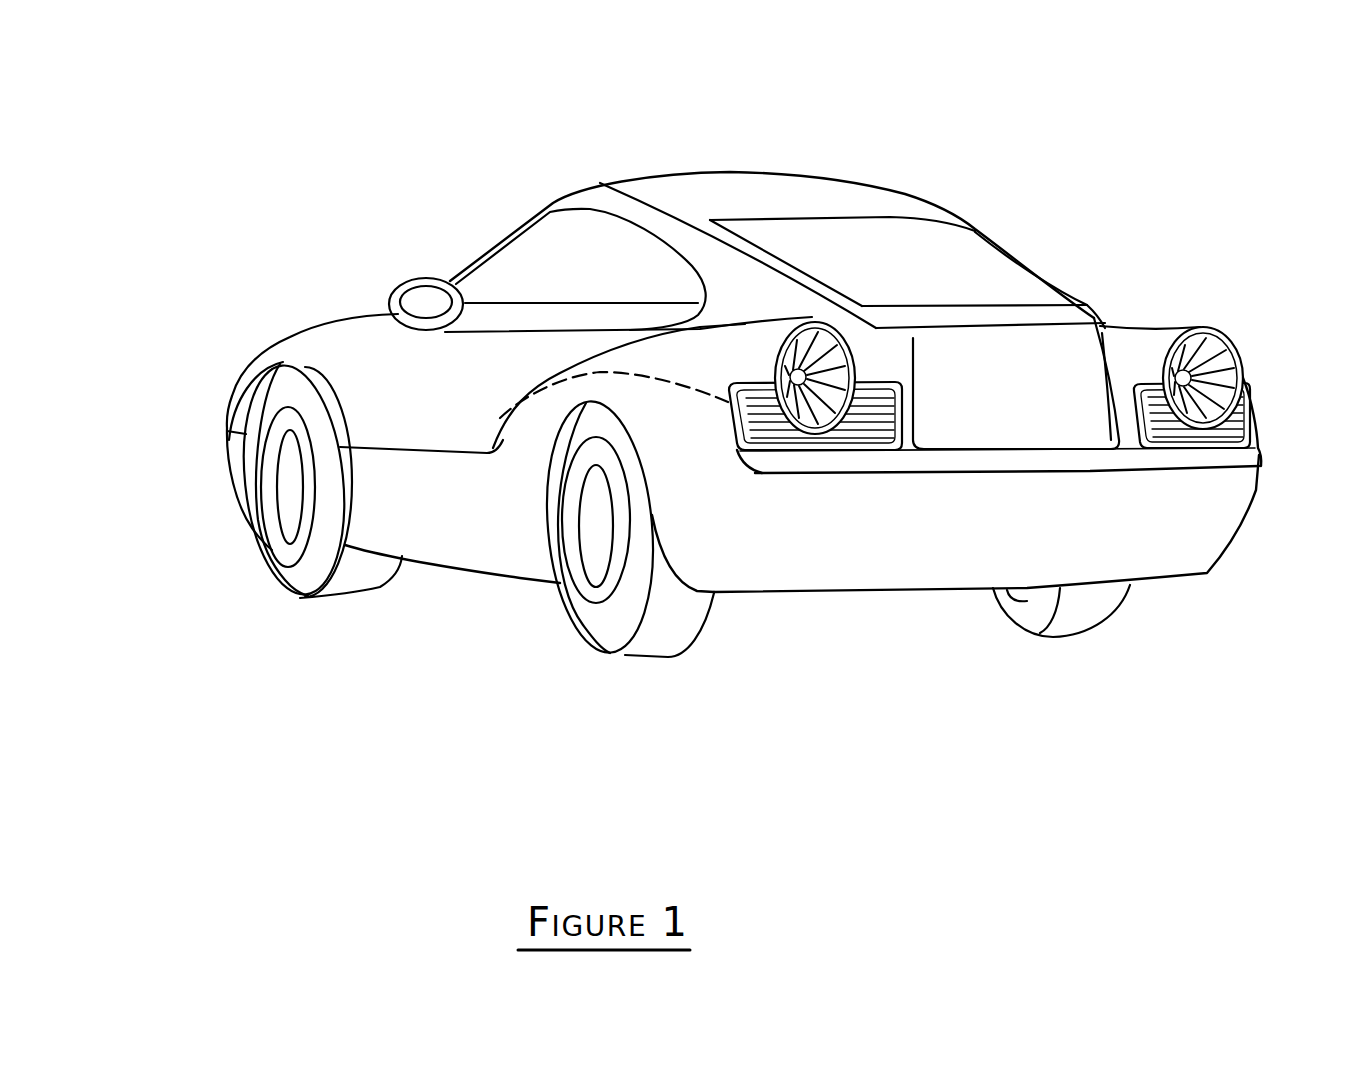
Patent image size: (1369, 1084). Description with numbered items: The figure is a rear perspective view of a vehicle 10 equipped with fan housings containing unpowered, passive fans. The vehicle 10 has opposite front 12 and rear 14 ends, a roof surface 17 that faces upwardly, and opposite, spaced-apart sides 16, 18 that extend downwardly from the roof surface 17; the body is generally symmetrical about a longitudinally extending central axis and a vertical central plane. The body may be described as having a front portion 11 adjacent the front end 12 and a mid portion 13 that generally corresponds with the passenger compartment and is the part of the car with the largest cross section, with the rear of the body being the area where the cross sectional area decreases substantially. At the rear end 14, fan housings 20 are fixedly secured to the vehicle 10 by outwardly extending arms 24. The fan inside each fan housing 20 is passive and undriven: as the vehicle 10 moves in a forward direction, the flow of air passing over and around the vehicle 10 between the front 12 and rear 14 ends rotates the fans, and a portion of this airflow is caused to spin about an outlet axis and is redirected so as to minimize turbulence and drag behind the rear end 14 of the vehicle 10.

The vehicle 10 is at (366, 300).
The front portion 11 is at (265, 343).
The front end 12 is at (214, 425).
The mid portion 13 is at (727, 167).
The rear end 14 is at (1216, 541).
The side 16 is at (462, 576).
The roof surface 17 is at (630, 172).
The side 18 is at (1042, 252).
The fan housing 20 is at (756, 345).
The arm 24 is at (858, 343).